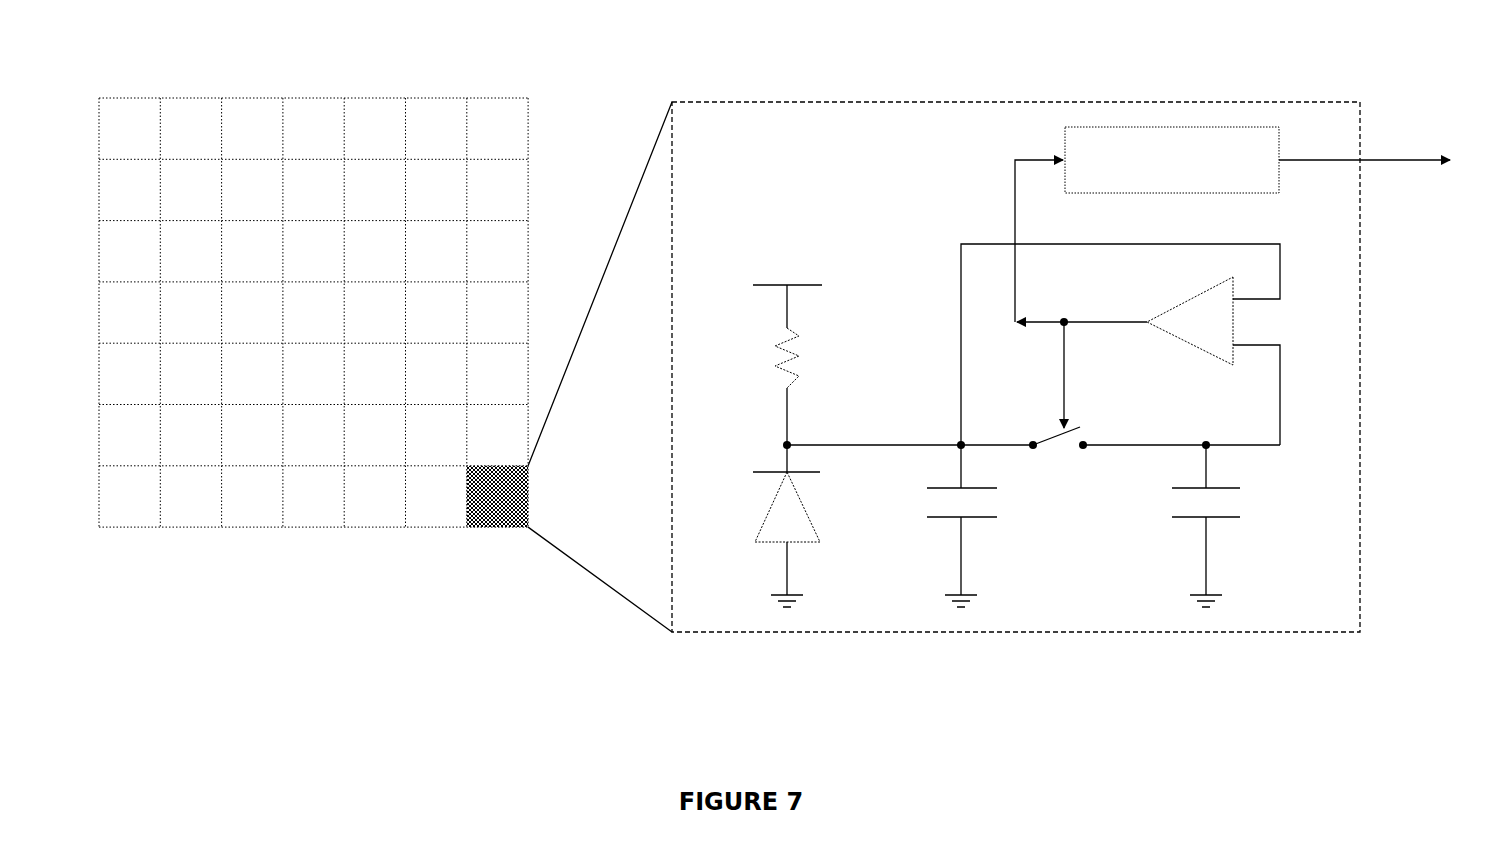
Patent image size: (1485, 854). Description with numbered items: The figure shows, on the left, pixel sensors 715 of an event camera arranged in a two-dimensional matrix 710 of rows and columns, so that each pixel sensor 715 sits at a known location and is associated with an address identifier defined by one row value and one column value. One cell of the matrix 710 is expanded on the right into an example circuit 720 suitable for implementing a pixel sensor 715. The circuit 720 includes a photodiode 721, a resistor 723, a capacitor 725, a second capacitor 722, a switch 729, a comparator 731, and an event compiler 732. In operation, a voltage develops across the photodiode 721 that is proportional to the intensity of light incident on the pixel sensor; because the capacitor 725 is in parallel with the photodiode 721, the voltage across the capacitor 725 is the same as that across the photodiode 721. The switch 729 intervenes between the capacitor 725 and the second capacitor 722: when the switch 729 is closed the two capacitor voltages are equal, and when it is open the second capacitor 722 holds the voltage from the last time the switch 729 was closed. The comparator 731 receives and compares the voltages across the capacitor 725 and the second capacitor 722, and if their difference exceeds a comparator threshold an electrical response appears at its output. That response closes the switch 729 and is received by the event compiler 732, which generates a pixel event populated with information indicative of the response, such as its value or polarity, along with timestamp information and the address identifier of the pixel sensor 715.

The 2D matrix 710 is at (283, 98).
The pixel sensor 715 is at (313, 312).
The circuit 720 is at (718, 101).
The photodiode 721 is at (761, 526).
The capacitor 722 is at (1185, 526).
The resistor 723 is at (776, 365).
The capacitor 725 is at (941, 526).
The switch 729 is at (1039, 447).
The comparator 731 is at (1125, 321).
The event compiler 732 is at (1235, 222).